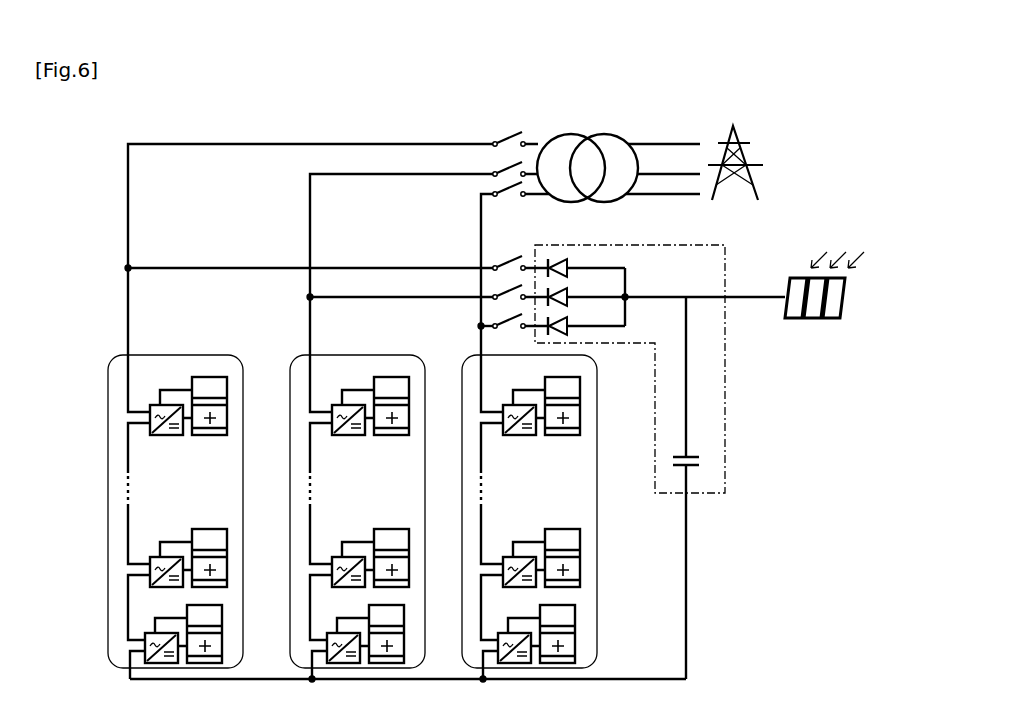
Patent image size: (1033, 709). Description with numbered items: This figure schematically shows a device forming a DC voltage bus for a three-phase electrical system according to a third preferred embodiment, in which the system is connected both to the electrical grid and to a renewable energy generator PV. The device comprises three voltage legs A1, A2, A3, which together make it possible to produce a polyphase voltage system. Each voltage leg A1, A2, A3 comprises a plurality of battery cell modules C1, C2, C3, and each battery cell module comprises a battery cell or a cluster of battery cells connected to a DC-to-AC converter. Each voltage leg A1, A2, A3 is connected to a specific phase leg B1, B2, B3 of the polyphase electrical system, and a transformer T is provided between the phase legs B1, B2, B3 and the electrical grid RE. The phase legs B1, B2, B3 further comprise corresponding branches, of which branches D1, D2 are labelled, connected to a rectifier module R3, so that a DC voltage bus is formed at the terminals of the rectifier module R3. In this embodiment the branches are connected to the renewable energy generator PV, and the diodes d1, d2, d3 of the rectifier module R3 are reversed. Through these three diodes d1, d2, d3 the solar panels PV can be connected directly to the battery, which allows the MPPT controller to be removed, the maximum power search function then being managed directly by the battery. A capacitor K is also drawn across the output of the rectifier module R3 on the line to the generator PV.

The voltage leg A1 is at (155, 517).
The voltage leg A2 is at (357, 517).
The voltage leg A3 is at (529, 517).
The battery cell module C1 is at (224, 431).
The battery cell module C2 is at (408, 422).
The battery cell module C3 is at (578, 432).
The phase leg B1 is at (175, 146).
The phase leg B2 is at (367, 175).
The phase leg B3 is at (475, 341).
The branch D1 is at (190, 264).
The branch D2 is at (438, 290).
The diode d1 is at (575, 264).
The diode d2 is at (575, 297).
The diode d3 is at (575, 326).
The transformer T is at (618, 136).
The electrical grid RE is at (750, 147).
The rectifier module R3 is at (726, 375).
The capacitor K is at (701, 456).
The renewable energy generator PV is at (828, 320).